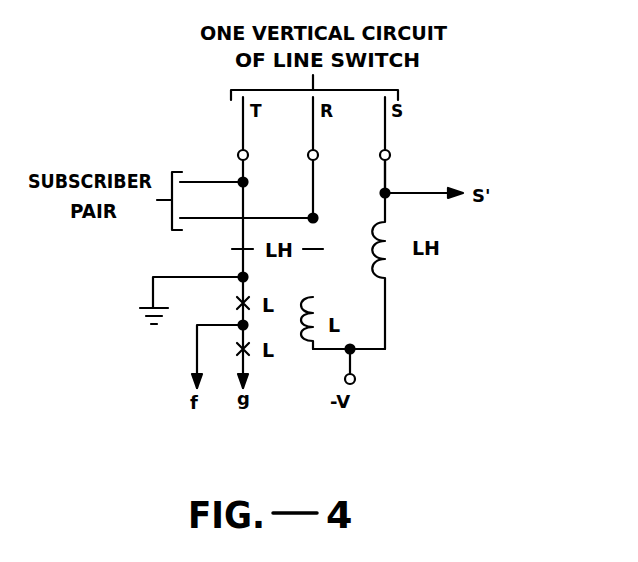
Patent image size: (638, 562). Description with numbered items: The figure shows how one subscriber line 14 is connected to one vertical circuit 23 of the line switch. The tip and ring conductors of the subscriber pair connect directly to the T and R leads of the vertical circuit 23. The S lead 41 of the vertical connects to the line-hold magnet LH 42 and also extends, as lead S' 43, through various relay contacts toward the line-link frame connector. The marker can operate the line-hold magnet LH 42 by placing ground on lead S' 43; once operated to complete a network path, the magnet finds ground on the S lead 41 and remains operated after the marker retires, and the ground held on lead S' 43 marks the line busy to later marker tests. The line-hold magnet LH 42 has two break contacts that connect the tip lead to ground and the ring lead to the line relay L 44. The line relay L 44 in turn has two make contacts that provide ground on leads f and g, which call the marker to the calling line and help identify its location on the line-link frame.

The vertical circuit 23 is at (398, 90).
The S lead 41 is at (385, 133).
The subscriber line 14 is at (170, 218).
The line relay L 44 is at (295, 332).
The lead S' 43 is at (432, 191).
The line-hold magnet LH 42 is at (398, 260).